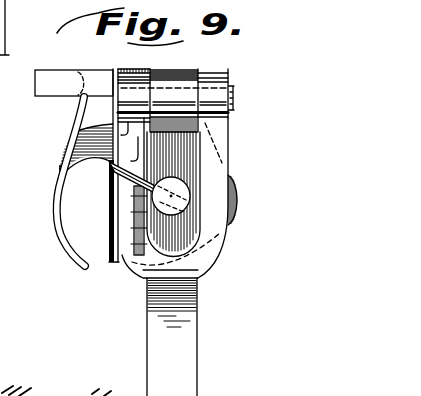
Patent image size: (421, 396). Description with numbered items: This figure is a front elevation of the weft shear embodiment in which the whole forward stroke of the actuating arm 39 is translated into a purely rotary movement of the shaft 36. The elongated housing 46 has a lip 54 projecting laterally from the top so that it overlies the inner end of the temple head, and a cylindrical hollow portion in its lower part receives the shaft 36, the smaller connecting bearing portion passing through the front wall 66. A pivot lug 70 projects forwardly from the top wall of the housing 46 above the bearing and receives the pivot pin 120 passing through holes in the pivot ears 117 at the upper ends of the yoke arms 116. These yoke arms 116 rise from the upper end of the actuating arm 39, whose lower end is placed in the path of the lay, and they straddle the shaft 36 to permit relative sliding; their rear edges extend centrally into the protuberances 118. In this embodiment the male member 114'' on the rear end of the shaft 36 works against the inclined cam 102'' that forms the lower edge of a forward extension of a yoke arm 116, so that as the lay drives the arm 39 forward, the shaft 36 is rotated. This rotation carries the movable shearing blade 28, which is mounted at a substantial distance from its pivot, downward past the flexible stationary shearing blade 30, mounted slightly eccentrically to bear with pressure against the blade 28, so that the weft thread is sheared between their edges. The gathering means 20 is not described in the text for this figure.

The housing body 20 is at (238, 130).
The movable shearing blade 28 is at (58, 183).
The stationary shearing blade 30 is at (60, 158).
The shaft 36 is at (192, 191).
The actuating arm 39 is at (174, 337).
The housing 46 is at (236, 213).
The lip 54 is at (74, 83).
The front wall 66 is at (180, 167).
The pivot lug 70 is at (180, 78).
The inclined cam 102'' is at (107, 244).
The male member 114'' is at (102, 165).
The yoke arms 116 is at (126, 131).
The pivot ears 117 is at (134, 80).
The protuberances 118 is at (133, 143).
The pivot pin 120 is at (234, 99).